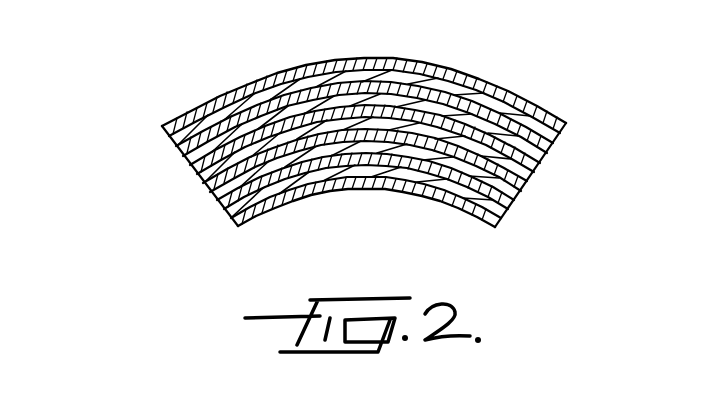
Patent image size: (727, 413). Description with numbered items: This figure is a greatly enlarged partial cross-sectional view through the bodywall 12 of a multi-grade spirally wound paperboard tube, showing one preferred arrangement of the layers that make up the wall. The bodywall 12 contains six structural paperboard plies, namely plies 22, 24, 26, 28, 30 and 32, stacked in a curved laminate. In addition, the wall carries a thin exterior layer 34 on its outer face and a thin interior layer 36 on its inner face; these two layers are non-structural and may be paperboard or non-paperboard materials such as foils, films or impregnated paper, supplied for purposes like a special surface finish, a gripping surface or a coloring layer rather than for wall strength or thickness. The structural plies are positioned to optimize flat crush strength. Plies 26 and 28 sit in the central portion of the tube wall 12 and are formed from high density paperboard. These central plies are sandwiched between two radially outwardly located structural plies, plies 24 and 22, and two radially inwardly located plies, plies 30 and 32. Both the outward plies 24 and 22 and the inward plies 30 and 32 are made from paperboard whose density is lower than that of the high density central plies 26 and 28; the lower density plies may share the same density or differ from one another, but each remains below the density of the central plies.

The bodywall 12 is at (166, 163).
The structural paperboard ply 22 is at (530, 118).
The structural paperboard ply 24 is at (550, 152).
The central high density paperboard ply 26 is at (540, 174).
The central high density paperboard ply 28 is at (505, 186).
The structural paperboard ply 30 is at (515, 200).
The structural paperboard ply 32 is at (478, 222).
The exterior layer 34 is at (296, 62).
The interior layer 36 is at (326, 186).